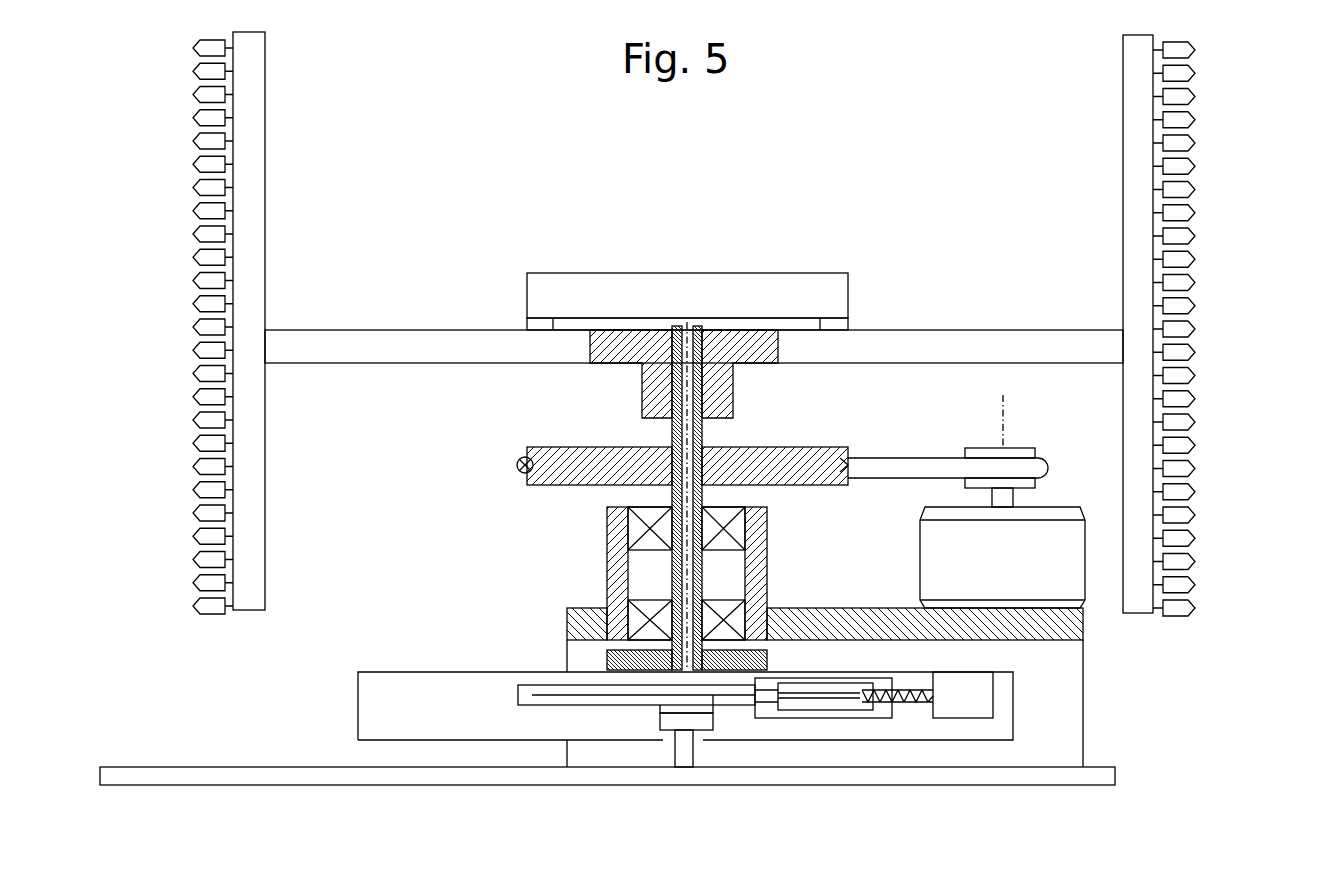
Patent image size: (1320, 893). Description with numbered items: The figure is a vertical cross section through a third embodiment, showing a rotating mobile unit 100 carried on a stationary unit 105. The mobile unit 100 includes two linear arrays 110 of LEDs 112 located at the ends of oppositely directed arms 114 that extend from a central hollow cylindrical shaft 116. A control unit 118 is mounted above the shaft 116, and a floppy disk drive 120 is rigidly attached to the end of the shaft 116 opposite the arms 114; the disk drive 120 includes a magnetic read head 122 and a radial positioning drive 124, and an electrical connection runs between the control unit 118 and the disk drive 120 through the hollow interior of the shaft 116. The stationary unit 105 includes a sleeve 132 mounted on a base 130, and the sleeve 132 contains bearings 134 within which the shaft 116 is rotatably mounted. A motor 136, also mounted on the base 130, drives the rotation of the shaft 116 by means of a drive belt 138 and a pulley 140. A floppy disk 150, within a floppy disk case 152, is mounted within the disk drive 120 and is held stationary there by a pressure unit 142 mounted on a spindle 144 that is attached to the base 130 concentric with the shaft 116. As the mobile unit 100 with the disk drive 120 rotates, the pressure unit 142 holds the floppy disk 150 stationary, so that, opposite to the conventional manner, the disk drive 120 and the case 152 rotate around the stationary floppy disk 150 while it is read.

The mobile unit 100 is at (284, 164).
The stationary unit 105 is at (140, 666).
The linear arrays 110 is at (253, 112).
The LEDs 112 is at (212, 165).
The arms 114 is at (328, 350).
The hollow cylindrical shaft 116 is at (705, 432).
The control unit 118 is at (627, 305).
The floppy disk drive 120 is at (462, 683).
The magnetic read head 122 is at (858, 682).
The radial positioning drive 124 is at (973, 707).
The base 130 is at (1083, 630).
The sleeve 132 is at (607, 572).
The bearings 134 is at (725, 605).
The motor 136 is at (985, 570).
The drive belt 138 is at (515, 465).
The pulley 140 is at (612, 453).
The pressure unit 142 is at (708, 725).
The spindle 144 is at (683, 750).
The floppy disk 150 is at (630, 695).
The floppy disk case 152 is at (545, 705).